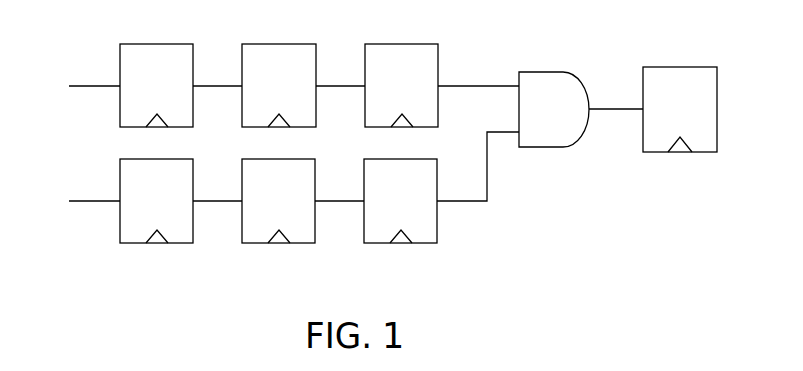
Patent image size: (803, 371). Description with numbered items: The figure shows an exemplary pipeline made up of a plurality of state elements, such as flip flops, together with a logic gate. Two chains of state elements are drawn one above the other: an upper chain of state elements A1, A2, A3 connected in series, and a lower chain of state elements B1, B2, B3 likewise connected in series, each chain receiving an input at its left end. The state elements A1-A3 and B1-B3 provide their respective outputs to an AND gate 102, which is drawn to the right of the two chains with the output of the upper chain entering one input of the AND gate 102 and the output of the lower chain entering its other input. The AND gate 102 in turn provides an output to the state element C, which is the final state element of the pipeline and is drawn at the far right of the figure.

The AND gate 102 is at (573, 115).
The state element A1 is at (156, 85).
The state element A2 is at (279, 85).
The state element A3 is at (401, 85).
The state element B1 is at (156, 201).
The state element B2 is at (278, 201).
The state element B3 is at (400, 201).
The state element C is at (680, 109).